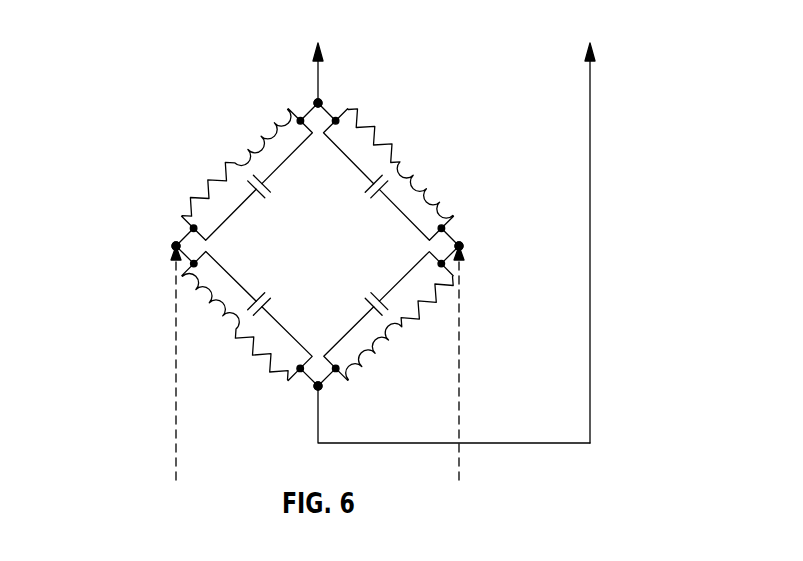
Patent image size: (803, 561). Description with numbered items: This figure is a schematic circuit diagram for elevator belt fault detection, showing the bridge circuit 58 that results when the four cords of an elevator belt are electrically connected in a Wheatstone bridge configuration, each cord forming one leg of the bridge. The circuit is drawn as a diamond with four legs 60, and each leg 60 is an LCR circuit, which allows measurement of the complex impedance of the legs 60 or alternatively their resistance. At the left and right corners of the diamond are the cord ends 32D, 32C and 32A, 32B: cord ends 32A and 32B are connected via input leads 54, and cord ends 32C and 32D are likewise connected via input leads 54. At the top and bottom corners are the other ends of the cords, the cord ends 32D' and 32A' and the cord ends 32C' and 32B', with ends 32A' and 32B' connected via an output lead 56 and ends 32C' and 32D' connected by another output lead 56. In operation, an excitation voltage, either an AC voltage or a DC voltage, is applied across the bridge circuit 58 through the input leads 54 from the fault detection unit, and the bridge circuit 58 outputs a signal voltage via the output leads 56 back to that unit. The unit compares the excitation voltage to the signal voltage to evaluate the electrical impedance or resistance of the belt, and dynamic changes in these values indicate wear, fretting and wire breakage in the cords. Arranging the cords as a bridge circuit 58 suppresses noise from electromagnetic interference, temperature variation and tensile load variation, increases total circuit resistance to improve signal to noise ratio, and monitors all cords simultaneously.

The bridge circuit 58 is at (112, 92).
The leg 60 is at (236, 161).
The cord end 32A' is at (357, 92).
The cord end 32B' is at (357, 400).
The cord end 32C' is at (279, 400).
The cord end 32D' is at (280, 92).
The cord end 32A is at (495, 235).
The cord end 32B is at (495, 259).
The cord end 32C is at (141, 259).
The cord end 32D is at (141, 235).
The output lead 56 is at (319, 66).
The input lead 54 is at (175, 420).